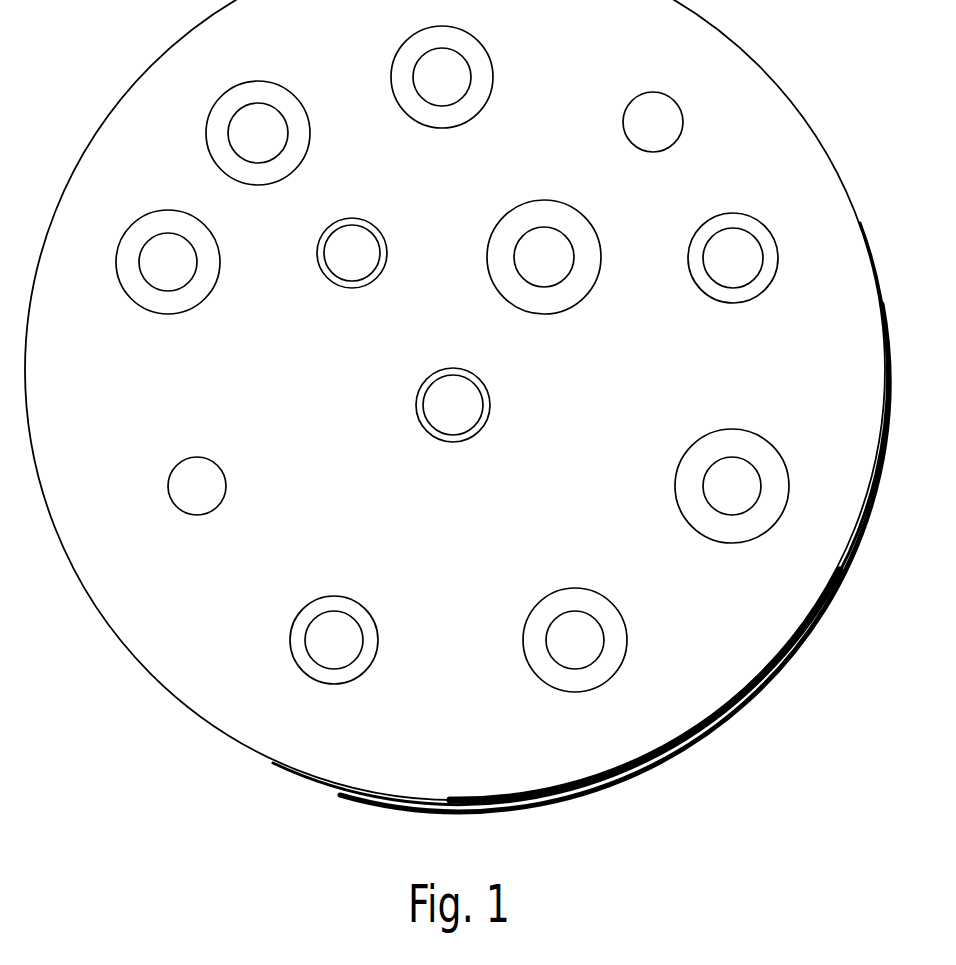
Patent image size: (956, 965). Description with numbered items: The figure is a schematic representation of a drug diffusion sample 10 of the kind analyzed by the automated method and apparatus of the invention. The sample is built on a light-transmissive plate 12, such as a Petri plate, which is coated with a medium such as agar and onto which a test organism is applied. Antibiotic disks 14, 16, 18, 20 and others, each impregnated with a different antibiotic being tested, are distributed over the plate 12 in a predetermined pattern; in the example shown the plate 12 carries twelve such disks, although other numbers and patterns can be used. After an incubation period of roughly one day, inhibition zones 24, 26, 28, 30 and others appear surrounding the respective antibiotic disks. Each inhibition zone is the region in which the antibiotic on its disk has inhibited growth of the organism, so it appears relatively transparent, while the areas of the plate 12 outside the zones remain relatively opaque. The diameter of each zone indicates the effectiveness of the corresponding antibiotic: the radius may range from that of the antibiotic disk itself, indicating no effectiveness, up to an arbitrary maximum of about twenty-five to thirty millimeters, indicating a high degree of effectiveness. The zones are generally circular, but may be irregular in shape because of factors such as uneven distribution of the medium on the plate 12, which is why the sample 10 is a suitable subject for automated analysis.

The drug diffusion sample 10 is at (193, 716).
The light-transmissive plate 12 is at (105, 623).
The antibiotic disk 14 is at (172, 282).
The antibiotic disk 16 is at (352, 278).
The antibiotic disk 18 is at (546, 280).
The antibiotic disk 20 is at (438, 418).
The inhibition zone 24 is at (178, 222).
The inhibition zone 26 is at (350, 221).
The inhibition zone 28 is at (545, 208).
The inhibition zone 30 is at (486, 391).